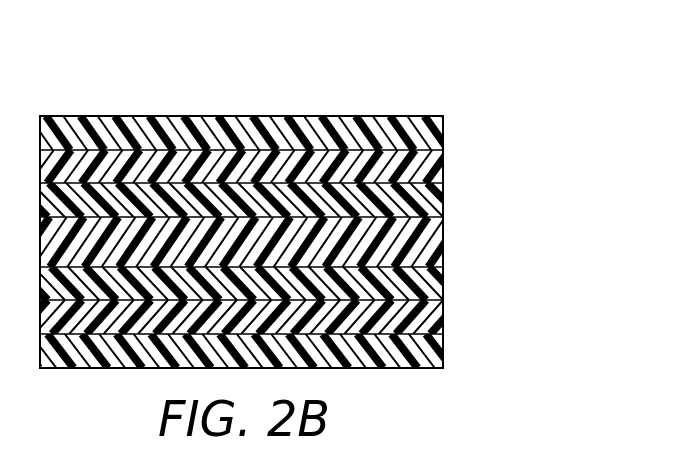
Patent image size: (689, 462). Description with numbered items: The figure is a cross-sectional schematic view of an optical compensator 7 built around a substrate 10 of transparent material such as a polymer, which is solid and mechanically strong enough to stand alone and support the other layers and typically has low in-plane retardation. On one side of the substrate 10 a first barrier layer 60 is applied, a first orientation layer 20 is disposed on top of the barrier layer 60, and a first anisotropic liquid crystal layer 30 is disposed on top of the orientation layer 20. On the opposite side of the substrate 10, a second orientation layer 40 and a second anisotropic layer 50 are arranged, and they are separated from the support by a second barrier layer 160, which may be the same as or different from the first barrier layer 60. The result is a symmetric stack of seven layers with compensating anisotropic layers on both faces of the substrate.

The optical compensator 7 is at (209, 87).
The first anisotropic liquid crystal layer 30 is at (443, 130).
The first orientation layer 20 is at (443, 165).
The first barrier layer 60 is at (443, 198).
The substrate 10 is at (443, 238).
The second barrier layer 160 is at (443, 285).
The second orientation layer 40 is at (443, 318).
The second anisotropic layer 50 is at (443, 351).